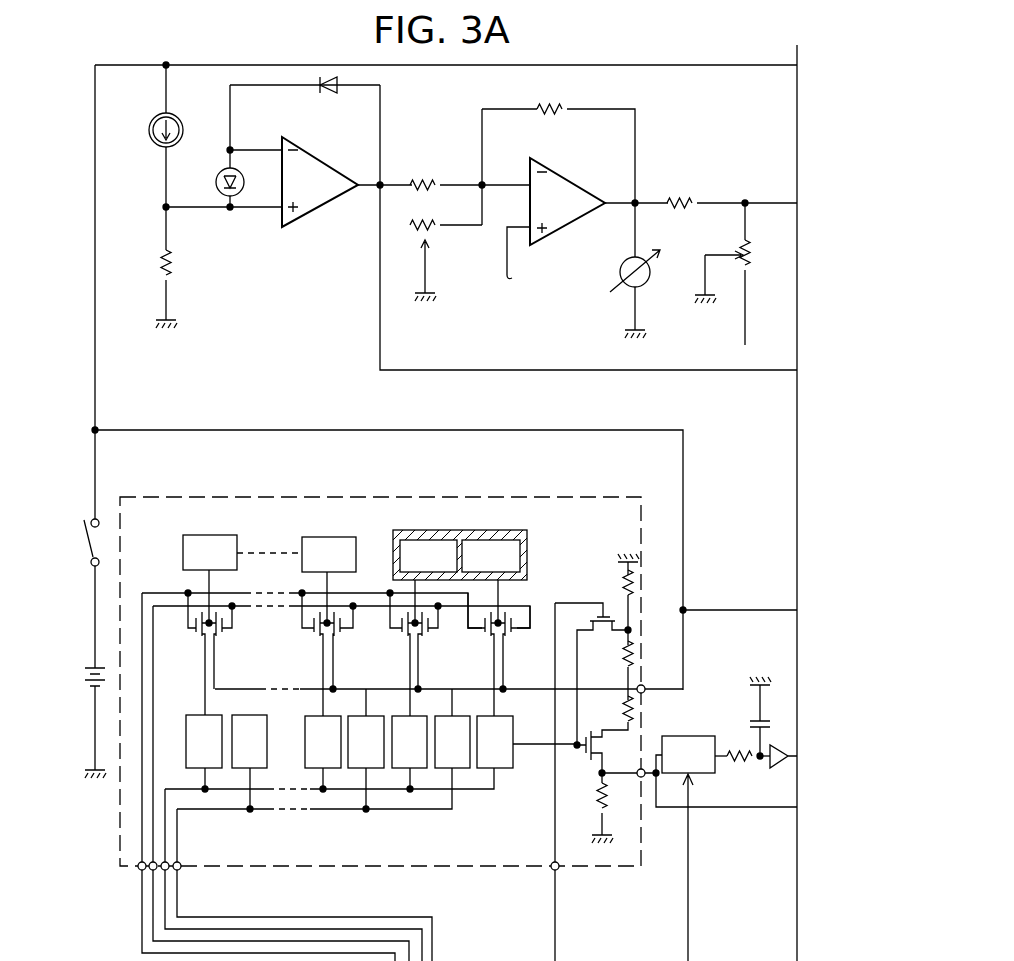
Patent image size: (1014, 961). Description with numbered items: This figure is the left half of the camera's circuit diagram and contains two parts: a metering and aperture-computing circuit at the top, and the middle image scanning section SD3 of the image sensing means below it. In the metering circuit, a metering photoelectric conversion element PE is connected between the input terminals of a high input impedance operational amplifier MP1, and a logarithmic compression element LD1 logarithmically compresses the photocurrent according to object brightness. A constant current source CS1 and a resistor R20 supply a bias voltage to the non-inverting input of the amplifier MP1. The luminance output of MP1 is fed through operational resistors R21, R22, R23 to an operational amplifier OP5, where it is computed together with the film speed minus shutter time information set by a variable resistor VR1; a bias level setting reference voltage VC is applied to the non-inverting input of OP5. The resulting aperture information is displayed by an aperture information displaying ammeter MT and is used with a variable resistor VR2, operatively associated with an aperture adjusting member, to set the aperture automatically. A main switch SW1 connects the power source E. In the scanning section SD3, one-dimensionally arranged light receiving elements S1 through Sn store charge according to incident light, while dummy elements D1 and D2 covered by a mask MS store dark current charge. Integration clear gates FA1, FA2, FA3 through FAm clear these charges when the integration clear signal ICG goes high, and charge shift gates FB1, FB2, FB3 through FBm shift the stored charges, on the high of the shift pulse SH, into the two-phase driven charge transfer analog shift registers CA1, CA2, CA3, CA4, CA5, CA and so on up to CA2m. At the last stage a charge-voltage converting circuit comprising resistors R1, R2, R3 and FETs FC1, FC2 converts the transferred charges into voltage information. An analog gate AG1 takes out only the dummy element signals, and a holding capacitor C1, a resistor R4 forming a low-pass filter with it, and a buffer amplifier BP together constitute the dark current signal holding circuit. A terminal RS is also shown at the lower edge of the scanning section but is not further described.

The constant current source CS1 is at (155, 145).
The metering photoelectric conversion element PE is at (225, 168).
The logarithmic compression element LD1 is at (327, 93).
The high input impedance operational amplifier MP1 is at (347, 182).
The resistor R20 is at (172, 265).
The operational resistor R21 is at (421, 178).
The operational resistor R22 is at (540, 106).
The operational resistor R23 is at (681, 198).
The operational amplifier OP5 is at (599, 201).
The variable resistor VR1 is at (433, 233).
The bias level setting reference voltage VC is at (510, 268).
The aperture information displaying ammeter MT is at (618, 270).
The variable resistor VR2 is at (745, 250).
The main switch SW1 is at (86, 516).
The power source E is at (82, 678).
The middle image scanning section SD3 is at (594, 495).
The light receiving element Sn is at (210, 579).
The light receiving element S1 is at (329, 580).
The mask MS is at (489, 574).
The dummy element D2 is at (428, 581).
The dummy element D1 is at (527, 548).
The charge shift gate FBm is at (196, 635).
The integration clear gate FAm is at (222, 635).
The charge shift gate FB3 is at (313, 635).
The integration clear gate FA3 is at (340, 635).
The charge shift gate FB2 is at (401, 635).
The integration clear gate FA2 is at (428, 635).
The charge shift gate FB1 is at (484, 635).
The integration clear gate FA1 is at (511, 635).
The charge transfer analog shift register CA2m is at (204, 752).
The charge transfer analog shift register CA is at (249, 762).
The charge transfer analog shift register CA5 is at (323, 752).
The charge transfer analog shift register CA4 is at (366, 749).
The charge transfer analog shift register CA3 is at (409, 752).
The charge transfer analog shift register CA2 is at (452, 728).
The charge transfer analog shift register CA1 is at (526, 742).
The FET FC1 is at (607, 612).
The resistor R2 is at (622, 655).
The resistor R3 is at (622, 708).
The FET FC2 is at (585, 756).
The resistor R1 is at (607, 805).
The analog gate AG1 is at (699, 848).
The resistor R4 is at (733, 762).
The buffer amplifier BP is at (779, 767).
The holding capacitor C1 is at (750, 724).
The shift pulse SH is at (140, 868).
The integration clear signal ICG is at (152, 868).
The reset terminal RS is at (551, 871).